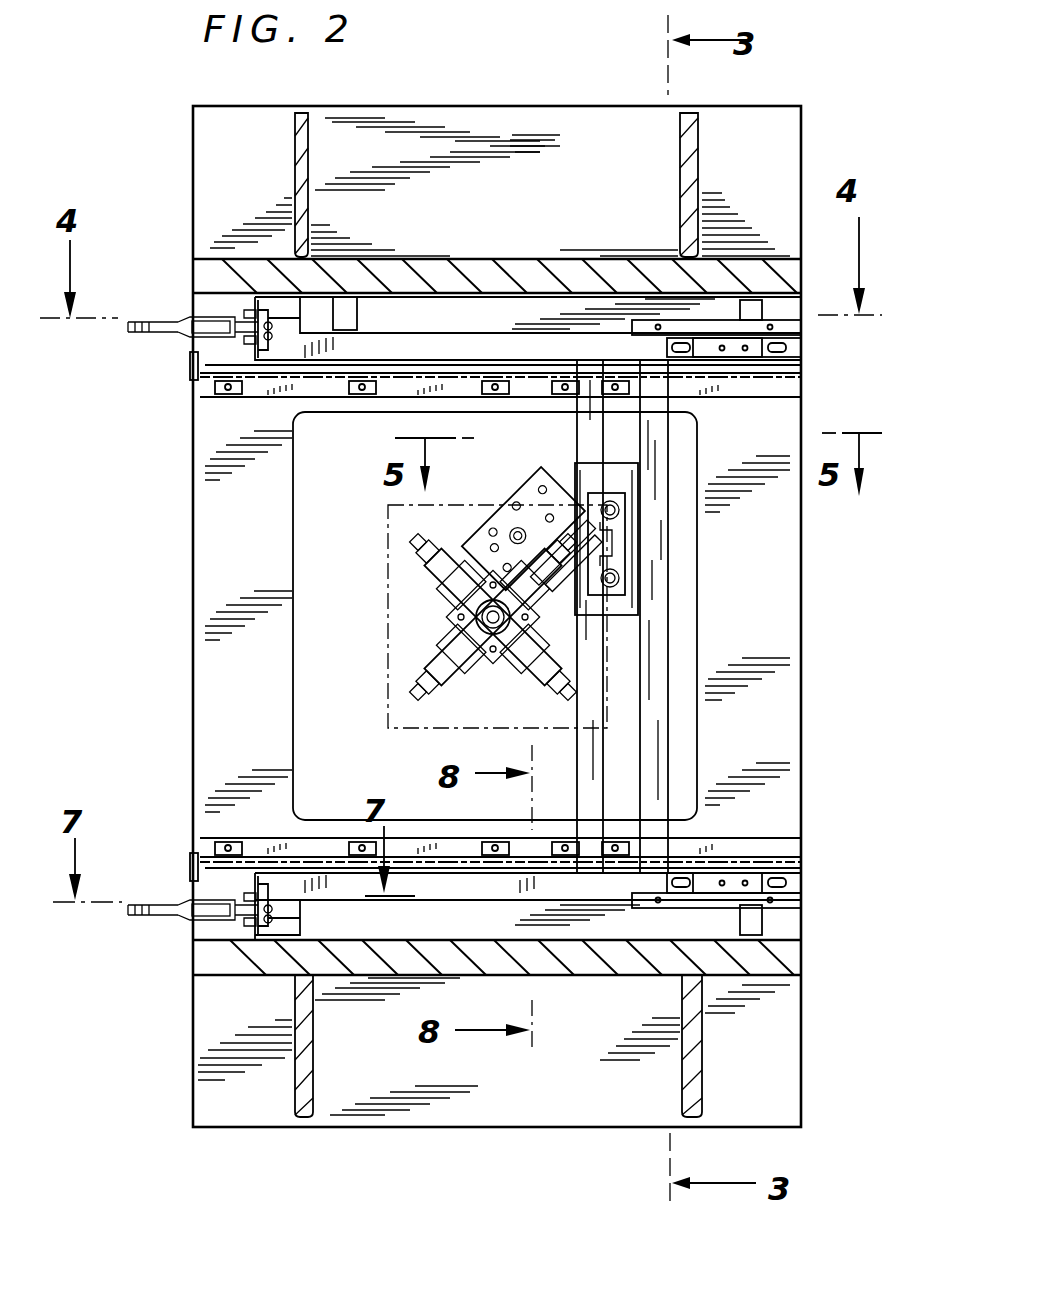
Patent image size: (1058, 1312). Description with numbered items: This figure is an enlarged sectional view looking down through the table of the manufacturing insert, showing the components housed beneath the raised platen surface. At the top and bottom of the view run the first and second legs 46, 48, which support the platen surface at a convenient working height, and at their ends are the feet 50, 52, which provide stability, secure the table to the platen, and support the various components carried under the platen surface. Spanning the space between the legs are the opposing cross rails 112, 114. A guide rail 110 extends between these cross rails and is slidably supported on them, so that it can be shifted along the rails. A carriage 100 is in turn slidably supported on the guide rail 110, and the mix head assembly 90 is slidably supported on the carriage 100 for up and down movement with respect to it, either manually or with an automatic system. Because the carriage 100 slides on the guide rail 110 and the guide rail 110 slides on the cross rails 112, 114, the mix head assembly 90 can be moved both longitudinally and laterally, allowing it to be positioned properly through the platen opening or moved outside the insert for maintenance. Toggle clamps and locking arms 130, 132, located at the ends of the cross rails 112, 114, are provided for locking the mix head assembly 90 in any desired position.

The first leg 46 is at (236, 957).
The second leg 48 is at (207, 270).
The foot 50 is at (313, 1070).
The foot 52 is at (305, 147).
The mix head assembly 90 is at (440, 608).
The carriage 100 is at (640, 612).
The guide rail 110 is at (600, 746).
The cross rail 112 is at (212, 366).
The cross rail 114 is at (222, 867).
The toggle clamp and locking arm 130 is at (150, 326).
The toggle clamp and locking arm 132 is at (146, 903).